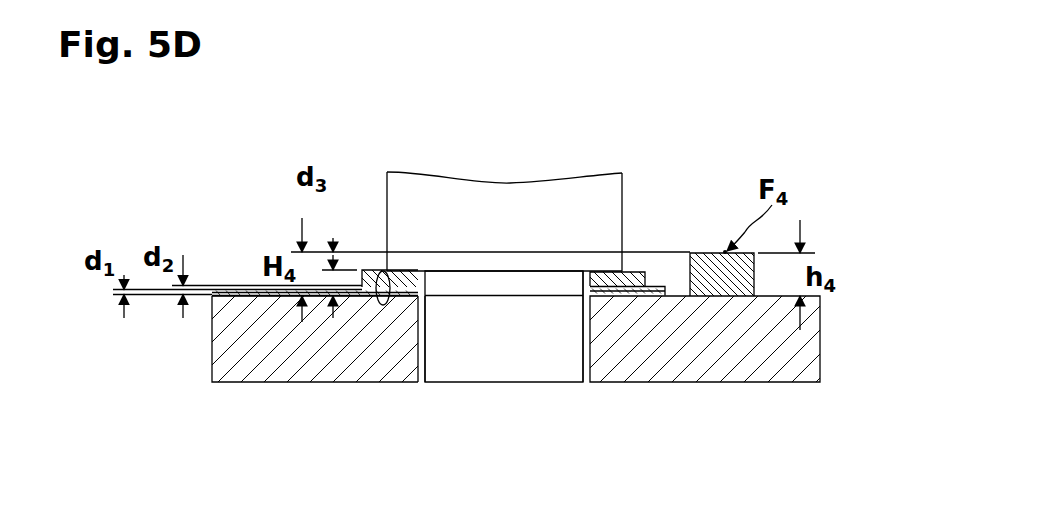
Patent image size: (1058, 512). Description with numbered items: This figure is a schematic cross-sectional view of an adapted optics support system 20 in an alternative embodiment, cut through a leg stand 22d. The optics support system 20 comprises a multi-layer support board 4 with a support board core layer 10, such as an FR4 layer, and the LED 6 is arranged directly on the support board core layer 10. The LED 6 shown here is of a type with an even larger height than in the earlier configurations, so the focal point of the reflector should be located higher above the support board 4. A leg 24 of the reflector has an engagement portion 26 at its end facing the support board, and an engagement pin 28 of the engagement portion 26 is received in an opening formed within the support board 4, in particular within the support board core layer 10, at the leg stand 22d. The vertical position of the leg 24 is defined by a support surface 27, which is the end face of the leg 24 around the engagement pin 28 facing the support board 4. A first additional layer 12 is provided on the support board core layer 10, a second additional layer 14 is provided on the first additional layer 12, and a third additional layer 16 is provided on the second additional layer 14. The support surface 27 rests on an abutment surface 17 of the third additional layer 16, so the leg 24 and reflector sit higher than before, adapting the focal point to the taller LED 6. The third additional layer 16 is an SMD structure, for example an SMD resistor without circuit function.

The support board 4 is at (262, 390).
The LED 6 is at (706, 266).
The support board core layer 10 is at (330, 355).
The first additional layer 12 is at (246, 289).
The second additional layer 14 is at (213, 289).
The third additional layer 16 is at (645, 277).
The abutment surface 17 is at (634, 270).
The optics support system 20 is at (852, 332).
The leg stand 22d is at (425, 390).
The leg 24 is at (527, 211).
The engagement portion 26 is at (642, 169).
The support surface 27 is at (378, 276).
The engagement pin 28 is at (525, 355).